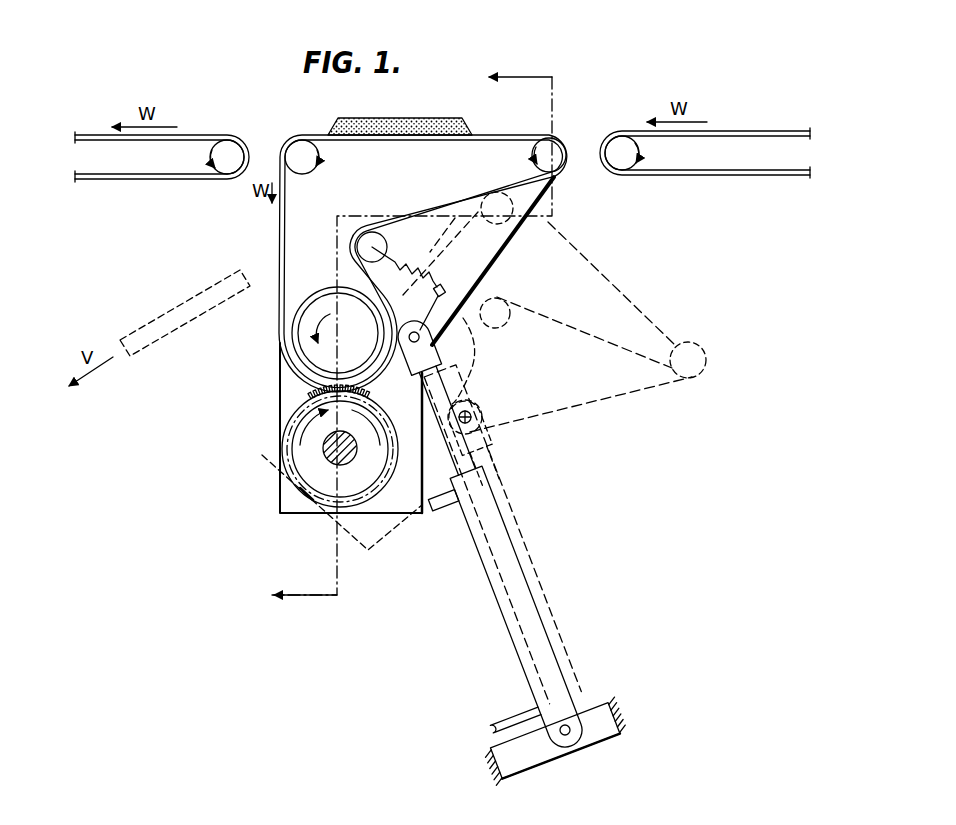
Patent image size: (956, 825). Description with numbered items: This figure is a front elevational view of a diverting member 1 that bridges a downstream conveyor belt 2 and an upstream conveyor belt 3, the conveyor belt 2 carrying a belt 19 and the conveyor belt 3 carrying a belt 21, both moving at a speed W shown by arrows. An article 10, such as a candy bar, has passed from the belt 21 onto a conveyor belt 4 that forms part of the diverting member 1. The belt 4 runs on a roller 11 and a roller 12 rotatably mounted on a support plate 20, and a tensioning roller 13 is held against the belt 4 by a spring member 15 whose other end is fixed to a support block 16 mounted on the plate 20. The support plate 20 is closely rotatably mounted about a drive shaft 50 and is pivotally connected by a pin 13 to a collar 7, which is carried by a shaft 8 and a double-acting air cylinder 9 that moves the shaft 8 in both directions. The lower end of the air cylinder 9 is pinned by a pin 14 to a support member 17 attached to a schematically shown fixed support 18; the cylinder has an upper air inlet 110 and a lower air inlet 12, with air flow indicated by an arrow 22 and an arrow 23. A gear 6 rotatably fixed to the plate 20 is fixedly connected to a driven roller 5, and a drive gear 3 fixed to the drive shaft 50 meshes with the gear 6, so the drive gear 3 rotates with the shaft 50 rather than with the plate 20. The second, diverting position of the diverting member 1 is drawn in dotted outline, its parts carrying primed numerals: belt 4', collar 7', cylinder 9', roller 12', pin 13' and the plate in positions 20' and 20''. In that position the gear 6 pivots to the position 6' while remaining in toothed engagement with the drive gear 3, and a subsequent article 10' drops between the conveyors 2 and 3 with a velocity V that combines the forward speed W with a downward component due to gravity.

The diverting member 1 is at (259, 293).
The downstream conveyor belt 2 is at (205, 185).
The upstream conveyor belt 3 is at (240, 433).
The conveyor belt 4 is at (408, 245).
The belt in swung position 4' is at (539, 280).
The driven roller 5 is at (326, 283).
The gear 6 is at (412, 443).
The pivoted position of gear 6' is at (488, 361).
The collar 7 is at (476, 276).
The pivot block in swung position 7' is at (493, 443).
The shaft 8 is at (441, 381).
The air cylinder 9 is at (516, 606).
The cylinder in swung position 9' is at (502, 534).
The article 10 is at (400, 106).
The subsequent article 10' is at (185, 311).
The roller 11 is at (311, 173).
The roller 12 is at (528, 435).
The roller in swung position 12' is at (712, 371).
The tensioning roller 13 is at (401, 282).
The pivot in swung position 13' is at (486, 414).
The pin 14 is at (556, 735).
The spring member 15 is at (431, 275).
The support block 16 is at (445, 292).
The support member 17 is at (587, 743).
The fixed support 18 is at (622, 745).
The belt 19 is at (213, 135).
The support plate 20 is at (330, 335).
The frame in swung position 20' is at (258, 475).
The frame in swung position 20'' is at (581, 409).
The belt 21 is at (773, 132).
The arrow 22 is at (367, 528).
The arrow 23 is at (480, 736).
The drive shaft 50 is at (329, 462).
The upper air inlet 110 is at (441, 511).